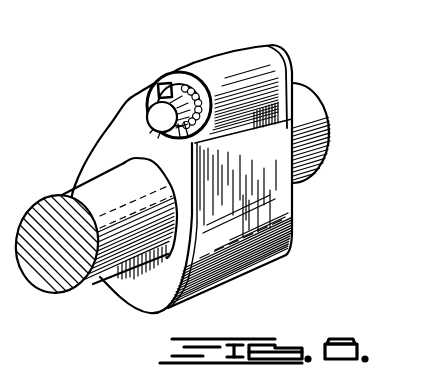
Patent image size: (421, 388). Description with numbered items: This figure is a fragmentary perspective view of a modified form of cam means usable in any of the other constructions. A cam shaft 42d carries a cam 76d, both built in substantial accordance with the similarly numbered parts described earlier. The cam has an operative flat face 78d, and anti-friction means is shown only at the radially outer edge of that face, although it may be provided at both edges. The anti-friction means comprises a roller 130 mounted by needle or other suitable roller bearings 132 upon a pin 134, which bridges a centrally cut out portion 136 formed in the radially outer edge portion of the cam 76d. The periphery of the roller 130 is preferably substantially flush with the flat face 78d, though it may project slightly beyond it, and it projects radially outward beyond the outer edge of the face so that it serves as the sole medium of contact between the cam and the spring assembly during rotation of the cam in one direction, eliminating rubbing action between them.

The roller 130 is at (241, 46).
The roller bearings 132 is at (183, 87).
The pin 134 is at (157, 118).
The centrally cut out portion 136 is at (300, 118).
The cam shaft 42d is at (105, 231).
The cam 76d is at (100, 143).
The operative flat face 78d is at (277, 203).